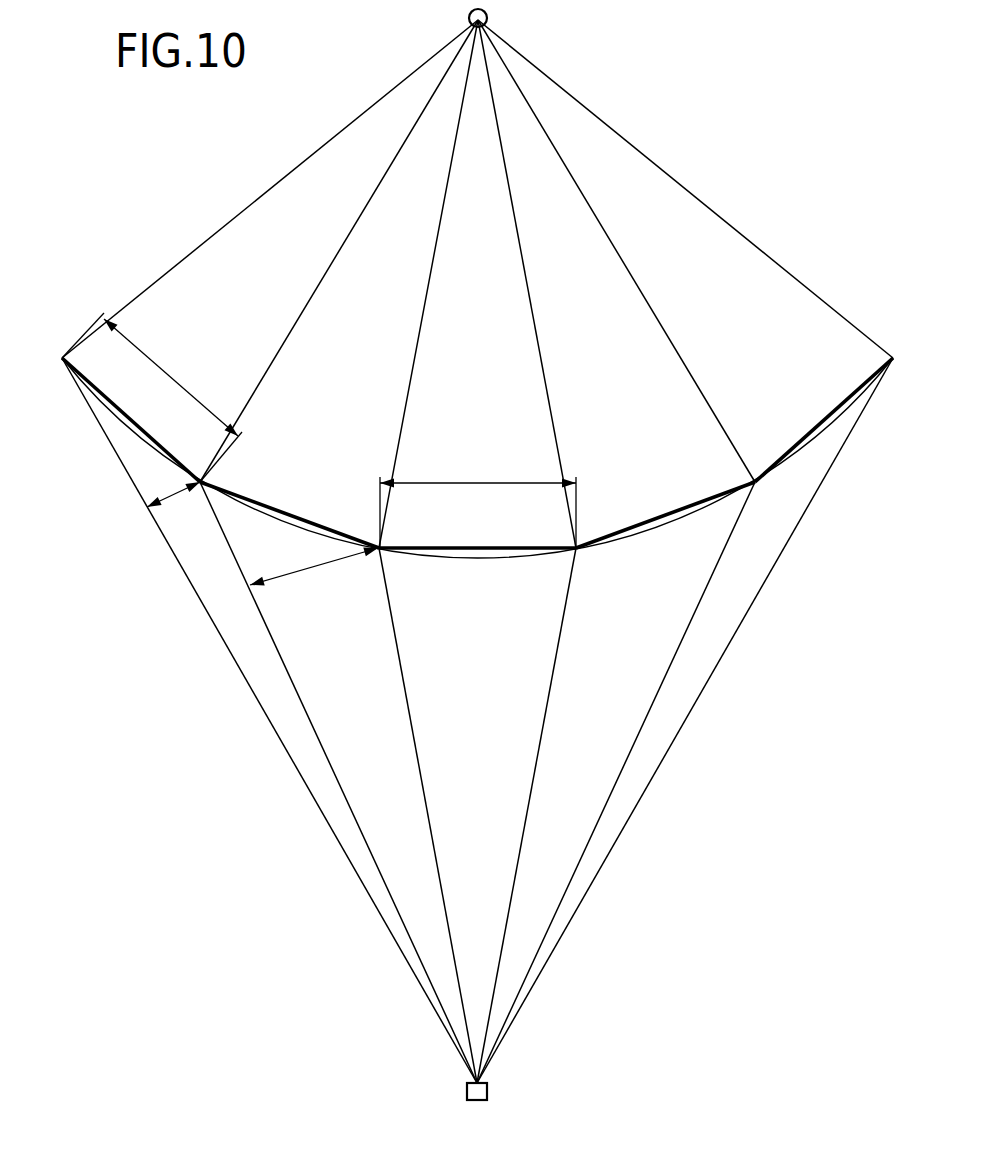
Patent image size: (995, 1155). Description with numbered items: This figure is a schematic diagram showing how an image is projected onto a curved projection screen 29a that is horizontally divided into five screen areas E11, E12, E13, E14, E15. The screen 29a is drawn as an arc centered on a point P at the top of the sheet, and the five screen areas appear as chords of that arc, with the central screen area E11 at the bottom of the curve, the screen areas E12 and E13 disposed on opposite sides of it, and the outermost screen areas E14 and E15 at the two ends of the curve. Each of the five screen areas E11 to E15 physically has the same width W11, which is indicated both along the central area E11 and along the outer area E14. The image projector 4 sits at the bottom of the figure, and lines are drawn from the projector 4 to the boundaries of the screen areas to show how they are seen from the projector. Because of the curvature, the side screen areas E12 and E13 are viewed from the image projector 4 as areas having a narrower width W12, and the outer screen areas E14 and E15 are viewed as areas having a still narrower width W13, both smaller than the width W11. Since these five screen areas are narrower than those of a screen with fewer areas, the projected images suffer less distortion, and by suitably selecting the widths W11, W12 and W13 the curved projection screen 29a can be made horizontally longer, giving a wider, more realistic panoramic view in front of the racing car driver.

The light source point P is at (489, 18).
The image projector 4 is at (494, 1092).
The curved projection screen 29a is at (812, 385).
The screen area E11 is at (477, 553).
The screen area E12 is at (318, 524).
The screen area E13 is at (648, 524).
The screen area E14 is at (127, 420).
The screen area E15 is at (817, 428).
The width W11 is at (319, 430).
The width W12 is at (314, 581).
The width W13 is at (178, 513).